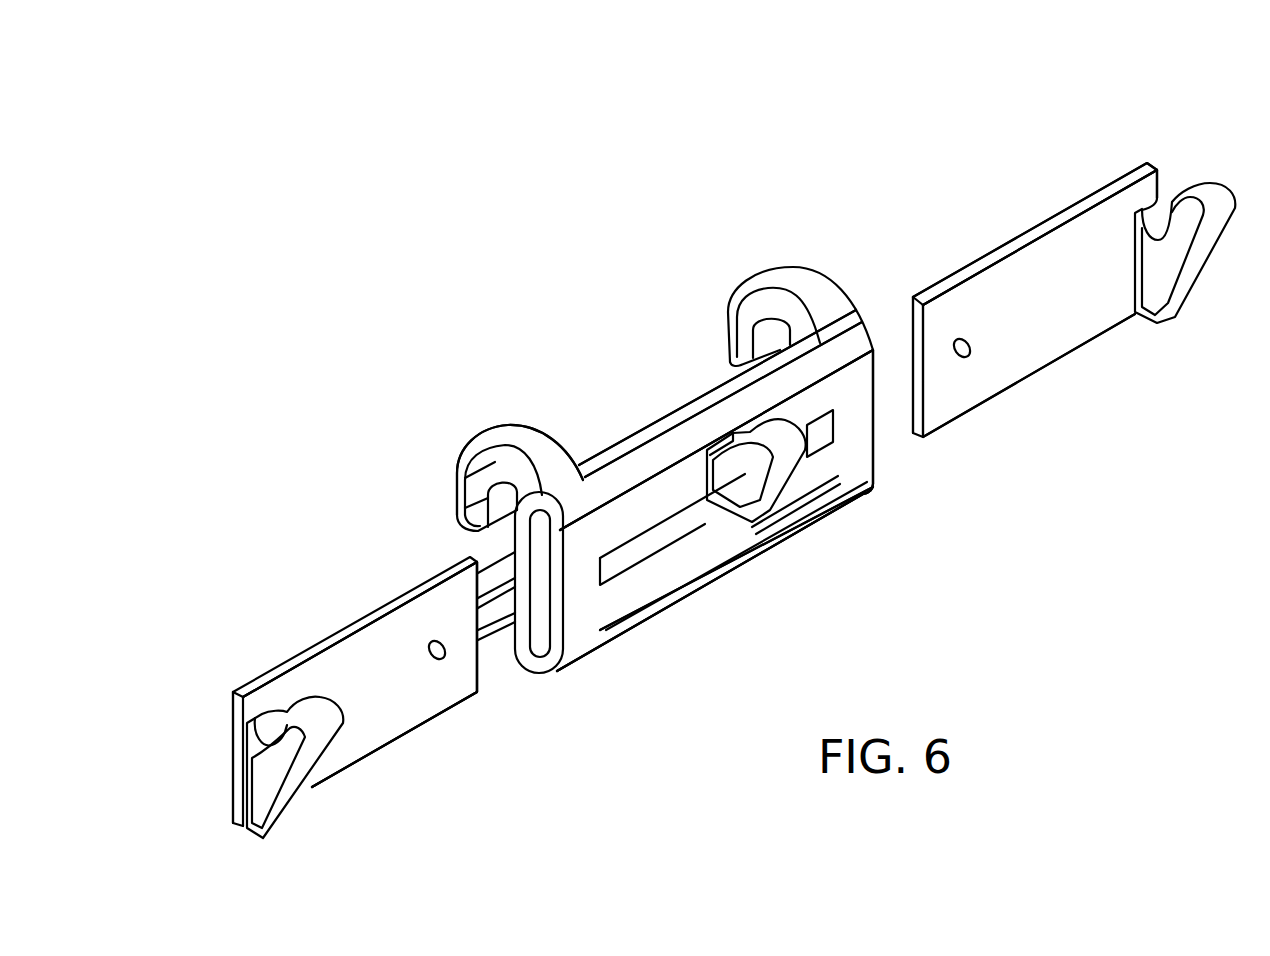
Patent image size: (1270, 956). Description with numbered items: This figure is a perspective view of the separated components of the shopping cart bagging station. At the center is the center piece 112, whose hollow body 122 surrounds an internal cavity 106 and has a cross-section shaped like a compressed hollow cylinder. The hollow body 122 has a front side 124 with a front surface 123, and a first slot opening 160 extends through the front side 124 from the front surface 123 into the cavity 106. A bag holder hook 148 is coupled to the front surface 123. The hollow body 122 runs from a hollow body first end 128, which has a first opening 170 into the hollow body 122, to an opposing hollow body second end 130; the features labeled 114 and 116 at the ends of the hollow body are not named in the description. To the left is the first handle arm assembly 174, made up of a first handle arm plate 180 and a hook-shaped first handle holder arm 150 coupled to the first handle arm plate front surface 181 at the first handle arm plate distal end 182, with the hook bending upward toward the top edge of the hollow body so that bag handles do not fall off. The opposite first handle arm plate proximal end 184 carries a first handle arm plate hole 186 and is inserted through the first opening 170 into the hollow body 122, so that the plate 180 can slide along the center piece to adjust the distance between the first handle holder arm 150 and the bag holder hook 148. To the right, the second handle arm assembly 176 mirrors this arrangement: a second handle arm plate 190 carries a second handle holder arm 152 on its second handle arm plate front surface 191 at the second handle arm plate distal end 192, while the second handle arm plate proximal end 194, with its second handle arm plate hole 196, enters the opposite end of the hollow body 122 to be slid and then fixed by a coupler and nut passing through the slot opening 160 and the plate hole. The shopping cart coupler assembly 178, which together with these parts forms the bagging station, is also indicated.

The cavity 106 is at (538, 572).
The center piece 112 is at (558, 268).
The first hood 114 is at (524, 443).
The second hood 116 is at (793, 287).
The hollow body 122 is at (626, 458).
The front surface 123 is at (572, 617).
The front side 124 is at (682, 560).
The hollow body first end 128 is at (542, 690).
The hollow body second end 130 is at (880, 499).
The bag holder hook 148 is at (772, 432).
The first handle holder arm 150 is at (290, 818).
The second handle holder arm 152 is at (1207, 190).
The first slot opening 160 is at (628, 546).
The first opening 170 is at (550, 632).
The first handle arm assembly 174 is at (269, 518).
The second handle arm assembly 176 is at (993, 130).
The shopping cart coupler assembly 178 is at (453, 423).
The first handle arm plate 180 is at (343, 663).
The first handle arm plate front surface 181 is at (368, 709).
The first handle arm plate distal end 182 is at (226, 683).
The first handle arm plate proximal end 184 is at (484, 707).
The first handle arm plate hole 186 is at (435, 644).
The second handle arm plate 190 is at (992, 284).
The second handle arm plate front surface 191 is at (1047, 317).
The second handle arm plate distal end 192 is at (1152, 158).
The second handle arm plate proximal end 194 is at (904, 287).
The second handle arm plate hole 196 is at (967, 353).